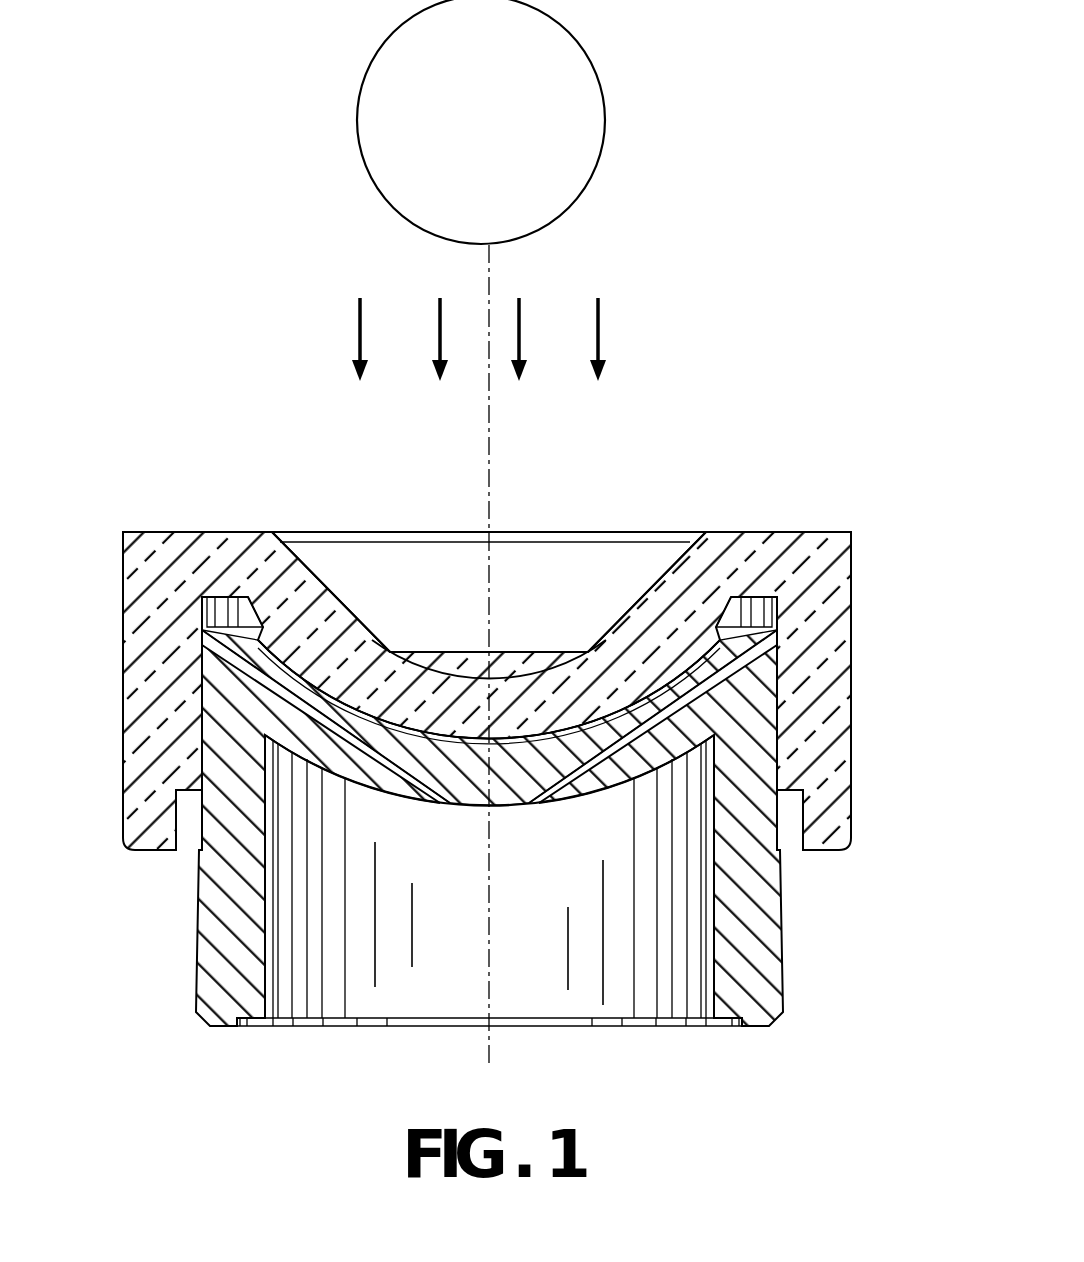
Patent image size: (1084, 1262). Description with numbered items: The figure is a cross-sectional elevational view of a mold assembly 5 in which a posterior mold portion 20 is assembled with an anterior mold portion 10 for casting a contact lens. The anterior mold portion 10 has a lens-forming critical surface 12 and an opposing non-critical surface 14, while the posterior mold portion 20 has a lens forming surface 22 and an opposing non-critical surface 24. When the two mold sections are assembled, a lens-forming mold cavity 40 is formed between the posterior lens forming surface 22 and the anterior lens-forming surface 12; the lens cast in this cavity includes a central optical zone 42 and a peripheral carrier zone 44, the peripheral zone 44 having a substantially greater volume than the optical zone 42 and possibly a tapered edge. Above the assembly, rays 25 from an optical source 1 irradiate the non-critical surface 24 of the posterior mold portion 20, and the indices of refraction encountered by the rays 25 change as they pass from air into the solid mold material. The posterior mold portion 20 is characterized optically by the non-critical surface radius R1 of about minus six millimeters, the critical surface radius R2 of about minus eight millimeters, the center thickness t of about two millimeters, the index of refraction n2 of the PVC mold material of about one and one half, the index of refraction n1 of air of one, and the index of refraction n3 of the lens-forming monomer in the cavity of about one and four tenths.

The optical source 1 is at (612, 68).
The rays 25 is at (600, 305).
The index of refraction of air n1 is at (650, 355).
The mold assembly 5 is at (112, 688).
The posterior mold portion 20 is at (538, 665).
The lens forming surface 22 is at (676, 657).
The non-critical surface 24 is at (640, 607).
The non-critical surface radius R1 is at (433, 672).
The critical surface radius R2 is at (450, 736).
The center thickness of the mold t is at (530, 688).
The index of refraction of mold material n2 is at (835, 745).
The mold cavity 40 is at (563, 726).
The central optical zone 42 is at (457, 797).
The peripheral carrier zone 44 is at (680, 707).
The index of refraction of lens-forming monomer n3 is at (545, 760).
The anterior mold portion 10 is at (530, 854).
The lens-forming surface 12 is at (608, 746).
The non-critical surface 14 is at (470, 808).